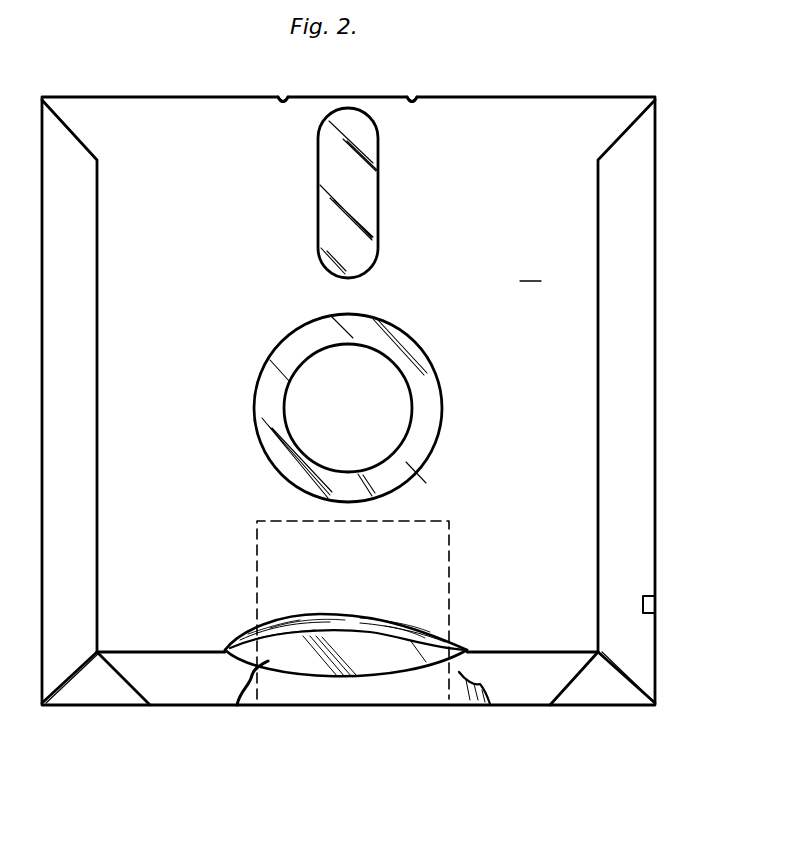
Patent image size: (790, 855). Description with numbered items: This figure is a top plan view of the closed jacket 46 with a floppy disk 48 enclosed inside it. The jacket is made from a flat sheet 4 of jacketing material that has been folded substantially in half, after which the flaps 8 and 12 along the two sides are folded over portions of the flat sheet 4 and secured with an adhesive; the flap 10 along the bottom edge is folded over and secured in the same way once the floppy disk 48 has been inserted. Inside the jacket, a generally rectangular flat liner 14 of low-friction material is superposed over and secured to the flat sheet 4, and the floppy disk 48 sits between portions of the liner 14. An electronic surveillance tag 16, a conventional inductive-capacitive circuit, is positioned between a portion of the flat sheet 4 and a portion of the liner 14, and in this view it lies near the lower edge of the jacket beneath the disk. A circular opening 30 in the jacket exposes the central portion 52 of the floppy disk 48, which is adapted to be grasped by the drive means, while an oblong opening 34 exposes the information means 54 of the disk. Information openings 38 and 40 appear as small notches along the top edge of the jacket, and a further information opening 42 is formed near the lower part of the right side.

The flat sheet of jacketing material 4 is at (460, 691).
The flap 8 is at (76, 313).
The flap 10 is at (560, 682).
The flap 12 is at (642, 298).
The generally rectangular flat liner 14 is at (430, 632).
The electronic surveillance tag 16 is at (283, 688).
The circular opening 30 is at (394, 330).
The oblong opening 34 is at (379, 199).
The information opening 38 is at (283, 96).
The information opening 40 is at (412, 97).
The information opening 42 is at (655, 604).
The closed jacket 46 is at (665, 337).
The floppy disk 48 is at (304, 416).
The central portion 52 is at (402, 491).
The information means 54 is at (361, 183).